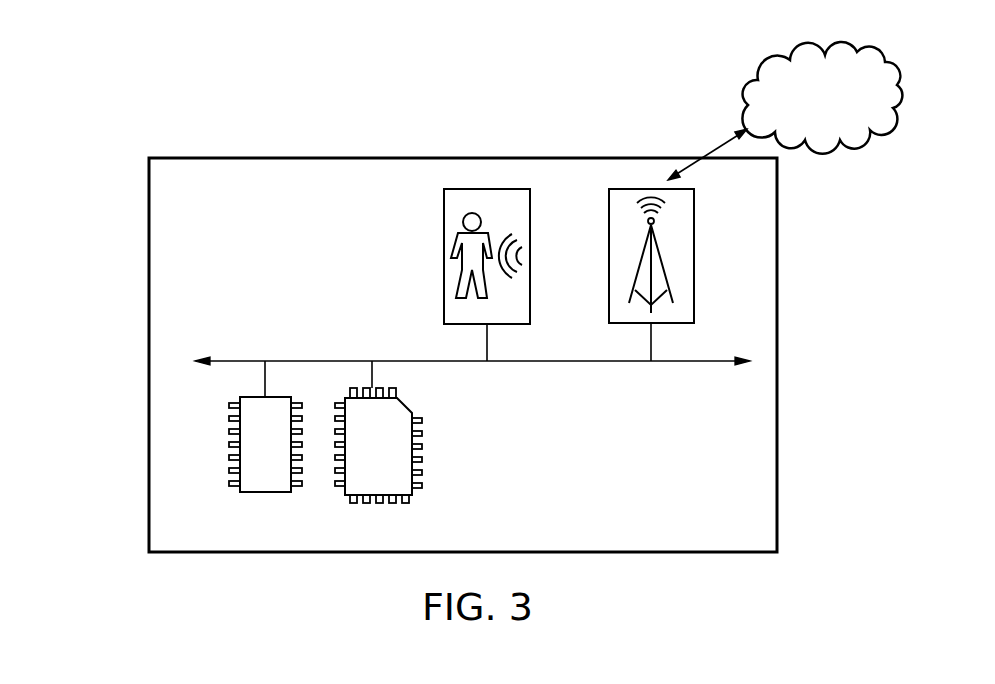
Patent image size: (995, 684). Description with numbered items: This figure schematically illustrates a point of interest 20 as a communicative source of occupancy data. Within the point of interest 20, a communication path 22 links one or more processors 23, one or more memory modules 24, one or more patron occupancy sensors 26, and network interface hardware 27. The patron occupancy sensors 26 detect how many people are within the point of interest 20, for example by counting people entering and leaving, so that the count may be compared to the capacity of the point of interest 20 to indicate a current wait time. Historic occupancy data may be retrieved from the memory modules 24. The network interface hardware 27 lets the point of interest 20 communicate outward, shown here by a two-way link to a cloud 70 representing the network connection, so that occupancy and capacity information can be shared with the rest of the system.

The point of interest 20 is at (112, 125).
The communication path 22 is at (232, 361).
The processors 23 is at (265, 492).
The memory modules 24 is at (350, 495).
The patron occupancy sensors 26 is at (485, 189).
The network interface hardware 27 is at (648, 189).
The network 70 is at (898, 97).